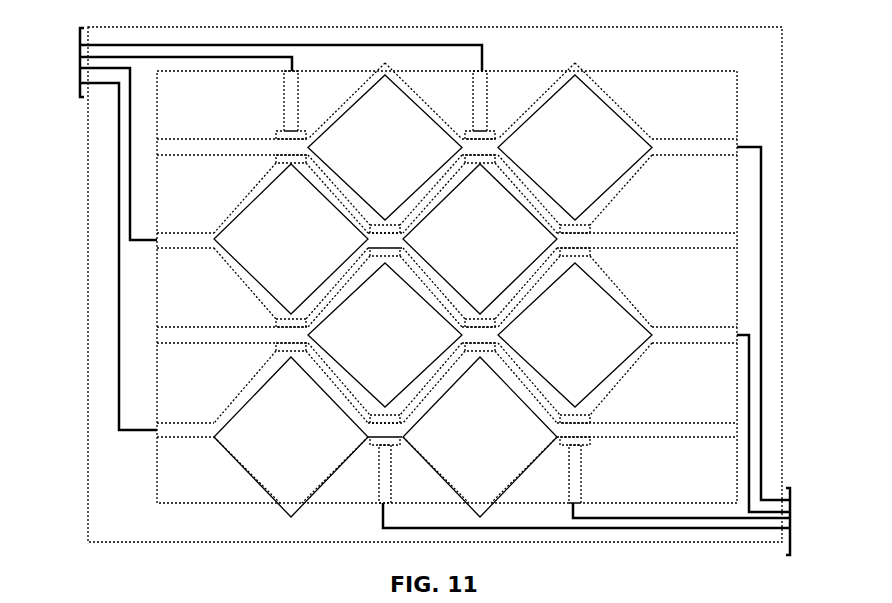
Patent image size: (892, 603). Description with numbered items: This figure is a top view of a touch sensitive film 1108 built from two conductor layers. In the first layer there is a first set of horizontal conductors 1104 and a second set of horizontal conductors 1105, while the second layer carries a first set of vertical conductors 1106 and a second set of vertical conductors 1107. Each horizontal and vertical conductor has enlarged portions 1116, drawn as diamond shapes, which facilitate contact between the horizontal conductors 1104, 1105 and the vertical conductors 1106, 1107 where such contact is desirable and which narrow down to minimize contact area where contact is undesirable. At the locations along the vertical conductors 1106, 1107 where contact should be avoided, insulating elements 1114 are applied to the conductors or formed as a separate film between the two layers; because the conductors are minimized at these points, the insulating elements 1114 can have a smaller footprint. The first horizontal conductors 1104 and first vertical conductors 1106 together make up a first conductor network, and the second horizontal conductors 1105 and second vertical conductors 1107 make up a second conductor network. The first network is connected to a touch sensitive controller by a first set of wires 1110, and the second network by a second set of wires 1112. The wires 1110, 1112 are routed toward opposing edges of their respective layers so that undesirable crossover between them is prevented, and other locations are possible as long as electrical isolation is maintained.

The first set of horizontal conductors 1104 is at (188, 243).
The second set of horizontal conductors 1105 is at (680, 143).
The first set of vertical conductors 1106 is at (293, 118).
The second set of vertical conductors 1107 is at (383, 502).
The touch sensitive film 1108 is at (729, 80).
The first set of wires 1110 is at (78, 68).
The second set of wires 1112 is at (793, 527).
The insulating elements 1114 is at (592, 262).
The enlarged portions 1116 is at (265, 255).